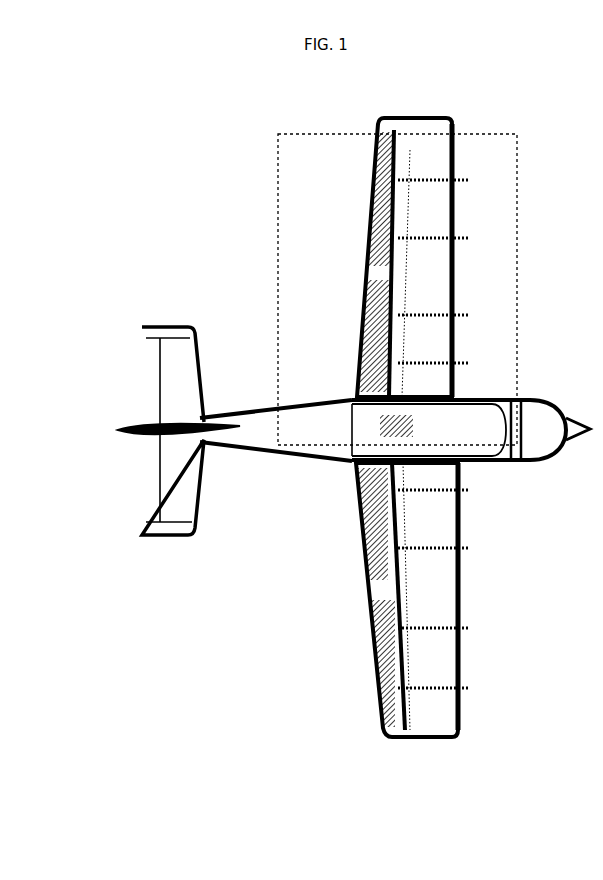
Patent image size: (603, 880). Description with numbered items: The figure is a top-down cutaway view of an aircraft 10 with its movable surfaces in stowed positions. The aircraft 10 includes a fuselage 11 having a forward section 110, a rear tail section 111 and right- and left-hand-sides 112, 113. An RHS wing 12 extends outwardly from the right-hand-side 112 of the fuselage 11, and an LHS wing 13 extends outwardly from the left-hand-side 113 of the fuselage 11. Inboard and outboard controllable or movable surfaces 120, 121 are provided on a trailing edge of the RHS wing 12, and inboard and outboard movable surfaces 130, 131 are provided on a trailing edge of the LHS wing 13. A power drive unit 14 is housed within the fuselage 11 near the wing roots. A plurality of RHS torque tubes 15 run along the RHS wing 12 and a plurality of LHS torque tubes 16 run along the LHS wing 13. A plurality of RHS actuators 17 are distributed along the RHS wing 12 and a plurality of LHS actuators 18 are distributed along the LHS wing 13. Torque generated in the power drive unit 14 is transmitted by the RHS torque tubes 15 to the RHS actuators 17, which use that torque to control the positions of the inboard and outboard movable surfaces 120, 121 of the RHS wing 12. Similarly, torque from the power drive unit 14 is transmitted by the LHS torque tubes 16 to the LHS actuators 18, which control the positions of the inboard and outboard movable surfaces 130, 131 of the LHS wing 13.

The aircraft 10 is at (326, 427).
The fuselage 11 is at (326, 431).
The forward section 110 is at (553, 442).
The rear tail section 111 is at (143, 450).
The right-hand-side 112 is at (476, 465).
The left-hand-side 113 is at (534, 398).
The RHS wing 12 is at (436, 600).
The inboard movable surface 120 is at (374, 521).
The outboard movable surface 121 is at (378, 680).
The LHS wing 13 is at (409, 257).
The inboard movable surface 130 is at (362, 364).
The outboard movable surface 131 is at (376, 205).
The power drive unit 14 is at (380, 440).
The RHS torque tubes 15 is at (403, 514).
The LHS torque tubes 16 is at (400, 385).
The RHS actuators 17 is at (425, 680).
The LHS actuators 18 is at (420, 247).